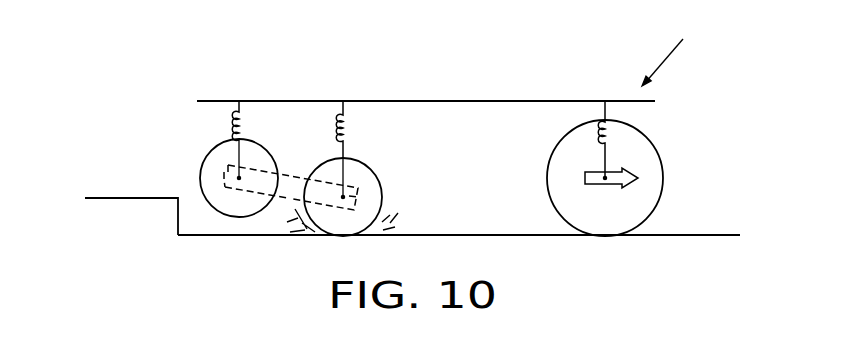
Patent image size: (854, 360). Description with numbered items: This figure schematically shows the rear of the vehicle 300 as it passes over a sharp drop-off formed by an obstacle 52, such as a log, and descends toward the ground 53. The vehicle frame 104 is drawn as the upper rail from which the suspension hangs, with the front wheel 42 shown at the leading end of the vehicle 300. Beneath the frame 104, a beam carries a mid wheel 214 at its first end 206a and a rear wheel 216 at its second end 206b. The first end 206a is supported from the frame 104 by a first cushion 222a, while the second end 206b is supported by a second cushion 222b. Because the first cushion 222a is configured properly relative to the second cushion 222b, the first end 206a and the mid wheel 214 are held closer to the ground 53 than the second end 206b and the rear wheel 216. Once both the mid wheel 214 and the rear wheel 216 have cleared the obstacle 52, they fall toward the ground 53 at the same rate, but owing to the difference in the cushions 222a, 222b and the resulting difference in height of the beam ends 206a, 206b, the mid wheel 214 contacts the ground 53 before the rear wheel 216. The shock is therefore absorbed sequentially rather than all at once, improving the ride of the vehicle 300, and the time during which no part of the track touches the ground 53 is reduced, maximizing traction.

The vehicle frame 104 is at (408, 101).
The vehicle 300 is at (679, 49).
The second cushion 222b is at (232, 126).
The first cushion 222a is at (348, 137).
The rear wheel 216 is at (201, 179).
The mid wheel 214 is at (383, 207).
The second end of beam 206b is at (212, 173).
The first end of beam 206a is at (390, 197).
The front wheel 42 is at (664, 176).
The obstacle 52 is at (181, 215).
The ground 53 is at (223, 236).